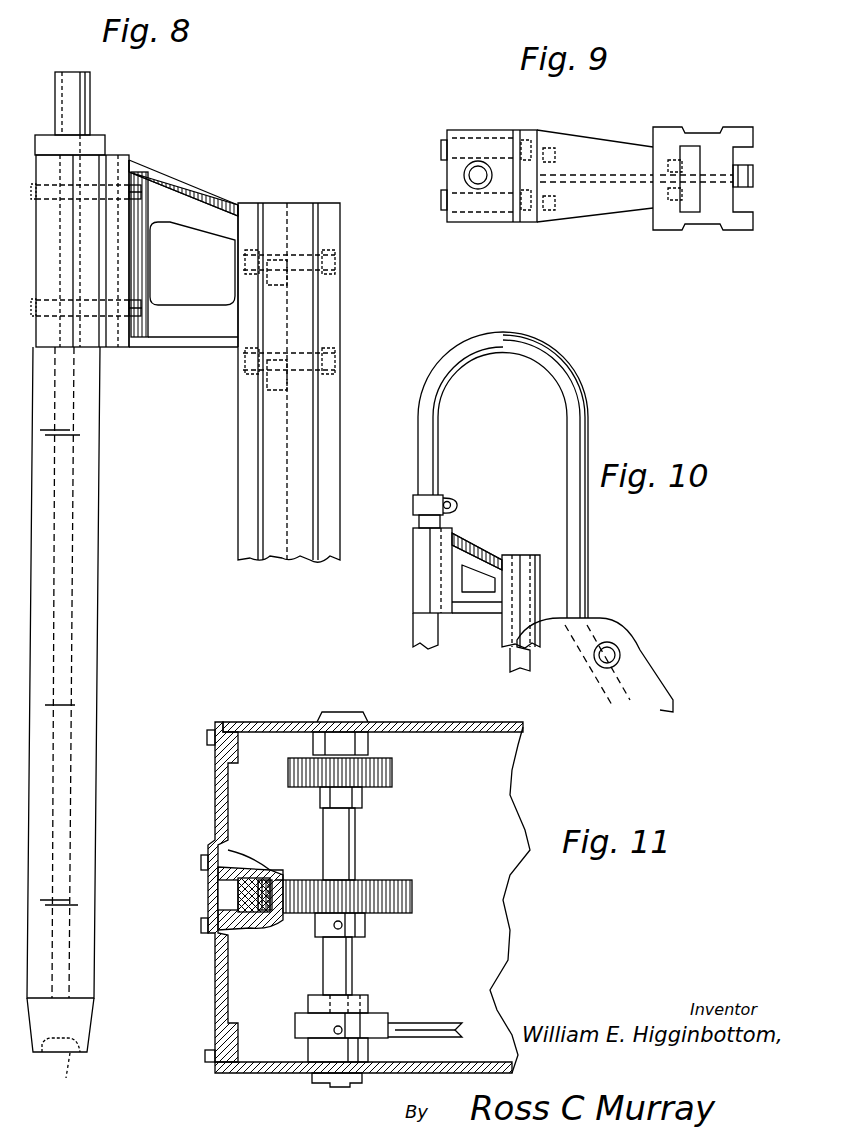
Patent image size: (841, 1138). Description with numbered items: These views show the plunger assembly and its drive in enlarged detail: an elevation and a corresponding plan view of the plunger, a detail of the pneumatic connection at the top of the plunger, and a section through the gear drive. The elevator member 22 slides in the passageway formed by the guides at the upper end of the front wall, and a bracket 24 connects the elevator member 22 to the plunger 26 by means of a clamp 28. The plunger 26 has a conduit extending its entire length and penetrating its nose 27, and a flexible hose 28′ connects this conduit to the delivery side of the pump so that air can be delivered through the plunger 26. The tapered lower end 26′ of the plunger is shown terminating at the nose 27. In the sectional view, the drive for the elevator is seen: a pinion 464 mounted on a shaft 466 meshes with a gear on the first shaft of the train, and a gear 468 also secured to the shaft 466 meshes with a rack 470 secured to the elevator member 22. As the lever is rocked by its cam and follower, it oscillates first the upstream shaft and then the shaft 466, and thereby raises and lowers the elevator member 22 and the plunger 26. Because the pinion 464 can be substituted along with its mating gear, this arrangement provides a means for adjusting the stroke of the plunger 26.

In FIG. 8, the elevator member 22 is at (283, 203).
In FIG. 9, the elevator member 22 is at (700, 138).
In FIG. 10, the elevator member 22 is at (548, 556).
In FIG. 11, the elevator member 22 is at (252, 855).
In FIG. 8, the bracket 24 is at (196, 185).
In FIG. 9, the bracket 24 is at (590, 147).
In FIG. 10, the bracket 24 is at (470, 548).
In FIG. 8, the plunger 26 is at (92, 650).
In FIG. 10, the plunger 26 is at (413, 635).
In FIG. 8, the tapered end of shaft 26′ is at (94, 1027).
In FIG. 8, the nose 27 is at (64, 1079).
In FIG. 8, the clamp 28 is at (36, 160).
In FIG. 9, the clamp 28 is at (447, 175).
In FIG. 10, the clamp 28 is at (435, 554).
In FIG. 10, the flexible hose 28′ is at (578, 392).
In FIG. 11, the pinion 464 is at (380, 772).
In FIG. 11, the shaft 466 is at (347, 977).
In FIG. 11, the gear 468 is at (402, 898).
In FIG. 11, the rack 470 is at (272, 870).